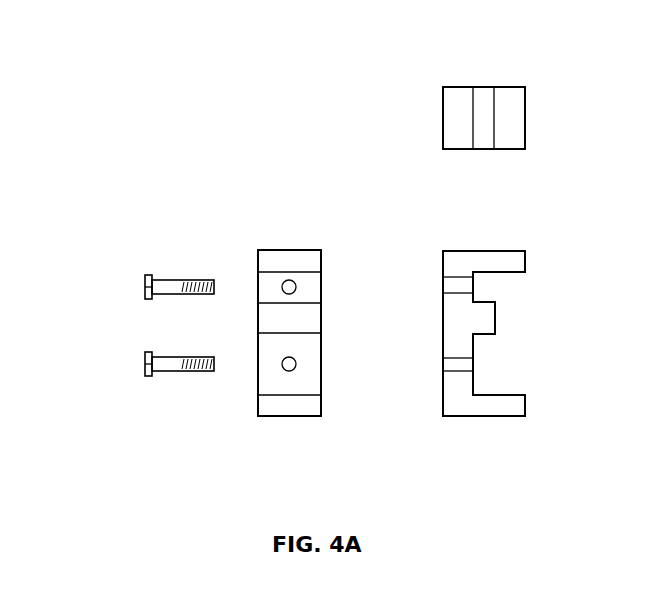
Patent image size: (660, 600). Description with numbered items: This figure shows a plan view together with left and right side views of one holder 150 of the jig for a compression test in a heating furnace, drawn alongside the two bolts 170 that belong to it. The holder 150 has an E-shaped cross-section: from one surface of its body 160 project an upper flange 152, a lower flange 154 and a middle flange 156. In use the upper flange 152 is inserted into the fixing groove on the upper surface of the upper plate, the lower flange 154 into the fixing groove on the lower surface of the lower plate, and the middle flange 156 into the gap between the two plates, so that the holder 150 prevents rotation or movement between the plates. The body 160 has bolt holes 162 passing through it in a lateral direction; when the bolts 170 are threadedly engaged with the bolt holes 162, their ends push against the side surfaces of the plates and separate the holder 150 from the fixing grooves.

The holder 150 is at (283, 128).
The body 160 is at (483, 92).
The bolt holes 162 is at (448, 360).
The upper flange 152 is at (519, 262).
The lower flange 154 is at (519, 404).
The middle flange 156 is at (489, 318).
The bolts 170 is at (143, 353).